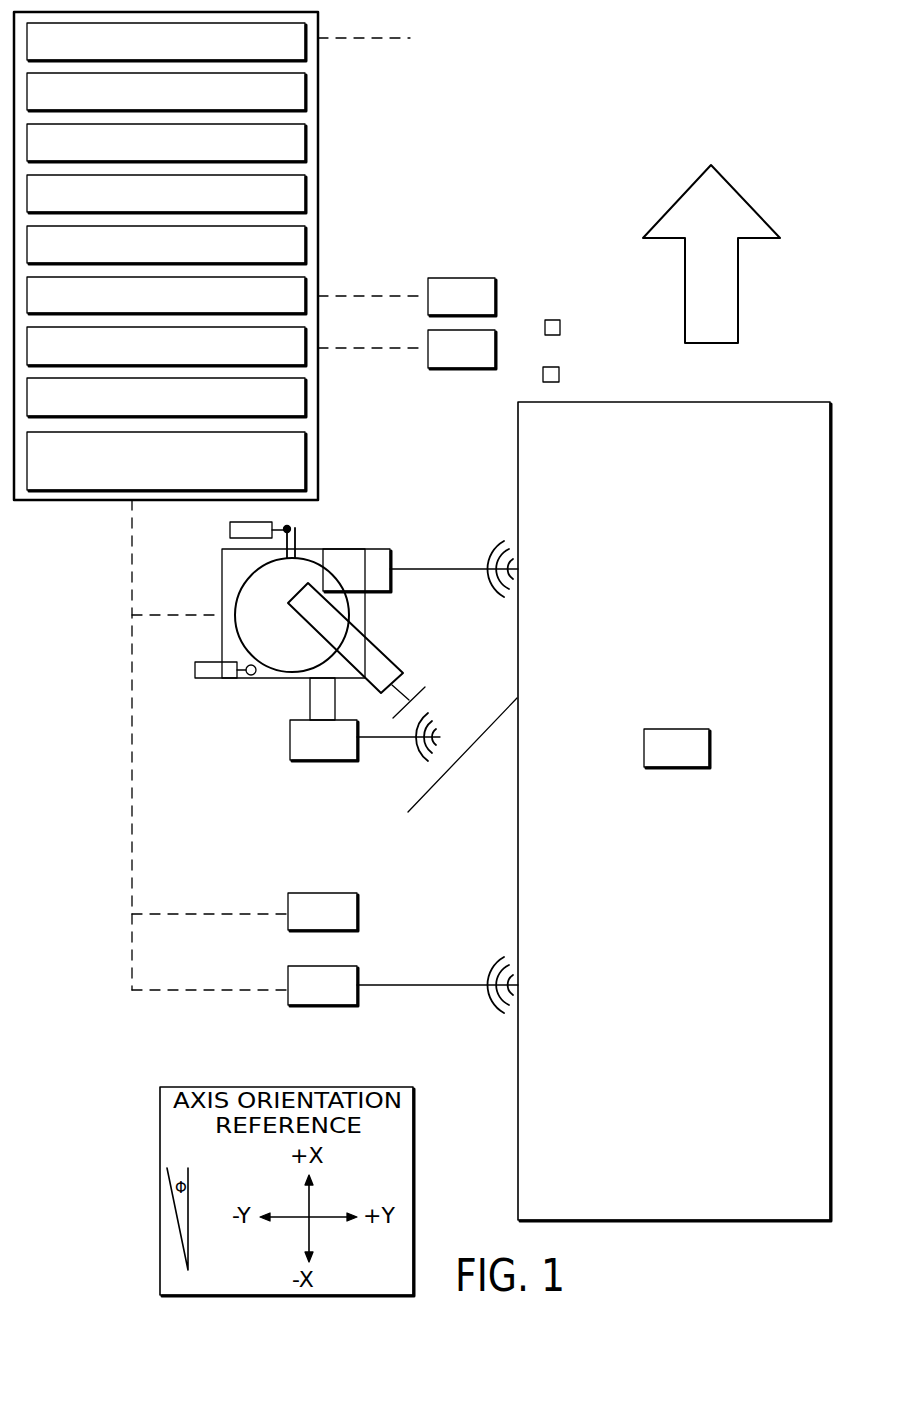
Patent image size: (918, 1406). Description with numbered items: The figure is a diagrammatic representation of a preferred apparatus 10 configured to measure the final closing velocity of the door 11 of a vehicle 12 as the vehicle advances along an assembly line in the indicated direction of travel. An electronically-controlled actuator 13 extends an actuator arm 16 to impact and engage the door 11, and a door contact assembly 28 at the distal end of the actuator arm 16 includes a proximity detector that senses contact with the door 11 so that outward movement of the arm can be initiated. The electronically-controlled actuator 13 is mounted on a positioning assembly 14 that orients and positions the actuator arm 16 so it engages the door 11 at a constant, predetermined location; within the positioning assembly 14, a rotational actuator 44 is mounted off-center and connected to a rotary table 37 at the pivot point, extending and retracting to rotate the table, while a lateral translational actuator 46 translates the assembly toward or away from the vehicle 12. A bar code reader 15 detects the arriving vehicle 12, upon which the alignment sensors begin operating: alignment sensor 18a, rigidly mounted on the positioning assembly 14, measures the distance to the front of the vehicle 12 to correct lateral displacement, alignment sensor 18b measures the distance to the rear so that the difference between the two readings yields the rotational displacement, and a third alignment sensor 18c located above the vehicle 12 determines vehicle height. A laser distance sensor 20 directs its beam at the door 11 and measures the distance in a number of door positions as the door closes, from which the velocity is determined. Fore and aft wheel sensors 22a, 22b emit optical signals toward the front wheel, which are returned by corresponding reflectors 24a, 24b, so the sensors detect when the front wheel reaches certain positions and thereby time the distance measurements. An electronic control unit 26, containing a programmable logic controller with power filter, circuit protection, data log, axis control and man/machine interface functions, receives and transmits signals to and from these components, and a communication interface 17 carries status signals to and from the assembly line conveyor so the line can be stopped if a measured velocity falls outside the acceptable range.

The apparatus 10 is at (731, 58).
The door 11 is at (448, 776).
The vehicle 12 is at (770, 401).
The electronically-controlled actuator 13 is at (373, 648).
The positioning assembly 14 is at (222, 568).
The bar code reader 15 is at (320, 892).
The actuator arm 16 is at (410, 692).
The communication interface 17 is at (346, 40).
The alignment sensor 18a is at (400, 557).
The alignment sensor 18b is at (350, 1022).
The third alignment sensor 18c is at (700, 792).
The laser distance sensor 20 is at (322, 762).
The fore wheel sensor 22a is at (468, 276).
The aft wheel sensor 22b is at (410, 382).
The reflector 24a is at (556, 319).
The reflector 24b is at (560, 378).
The electronic control unit 26 is at (320, 147).
The door contact assembly 28 is at (424, 690).
The rotary table 37 is at (300, 558).
The rotational actuator 44 is at (228, 531).
The lateral translational actuator 46 is at (200, 680).